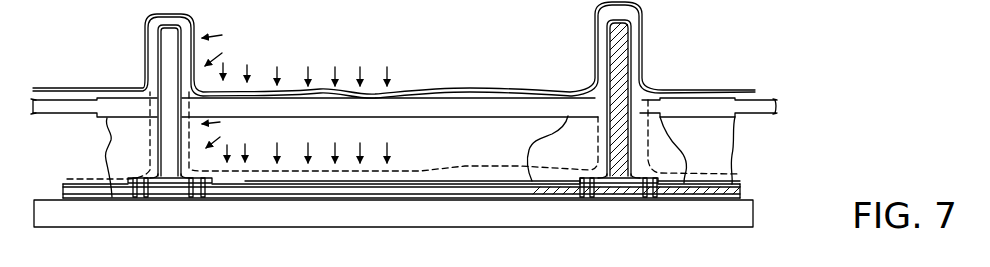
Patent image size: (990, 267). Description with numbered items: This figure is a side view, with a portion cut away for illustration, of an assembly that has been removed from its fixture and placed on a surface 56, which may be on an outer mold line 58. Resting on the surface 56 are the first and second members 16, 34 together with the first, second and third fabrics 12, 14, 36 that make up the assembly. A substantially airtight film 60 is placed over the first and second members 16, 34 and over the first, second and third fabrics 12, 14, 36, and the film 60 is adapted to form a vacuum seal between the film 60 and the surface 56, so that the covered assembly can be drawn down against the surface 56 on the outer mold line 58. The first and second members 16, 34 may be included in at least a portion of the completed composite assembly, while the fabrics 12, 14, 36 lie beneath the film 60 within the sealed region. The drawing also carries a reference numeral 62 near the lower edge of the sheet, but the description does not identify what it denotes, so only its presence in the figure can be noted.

The first fabric 12 is at (84, 178).
The second fabric 14 is at (110, 135).
The first member 16 is at (764, 98).
The second member 34 is at (623, 48).
The third fabric 36 is at (159, 44).
The surface 56 is at (747, 196).
The outer mold line 58 is at (745, 216).
The substantially airtight film 60 is at (653, 76).
The element 62 is at (222, 263).